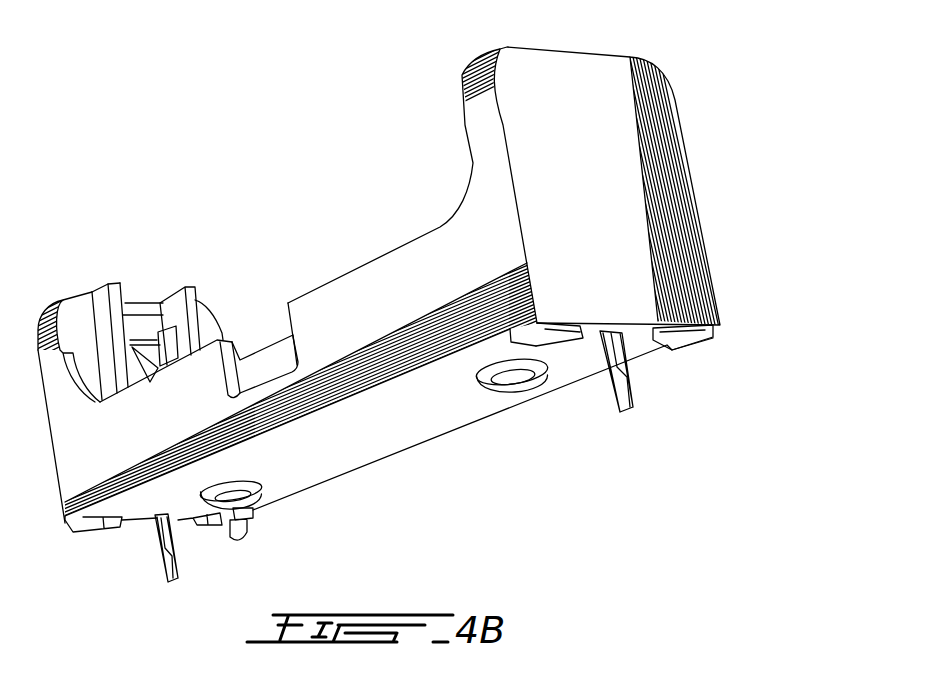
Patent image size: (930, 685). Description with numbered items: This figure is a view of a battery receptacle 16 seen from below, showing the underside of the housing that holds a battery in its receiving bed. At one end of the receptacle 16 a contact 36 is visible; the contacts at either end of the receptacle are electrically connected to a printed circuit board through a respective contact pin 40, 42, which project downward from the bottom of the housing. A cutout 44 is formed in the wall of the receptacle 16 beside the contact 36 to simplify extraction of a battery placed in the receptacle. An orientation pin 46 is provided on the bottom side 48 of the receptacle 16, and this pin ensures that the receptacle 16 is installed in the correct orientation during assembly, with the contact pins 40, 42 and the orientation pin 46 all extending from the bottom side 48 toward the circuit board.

The receptacle 16 is at (376, 291).
The contact 36 is at (153, 347).
The contact pin 40 is at (165, 572).
The contact pin 42 is at (633, 400).
The cutout 44 is at (272, 362).
The orientation pin 46 is at (245, 542).
The bottom side 48 is at (422, 400).